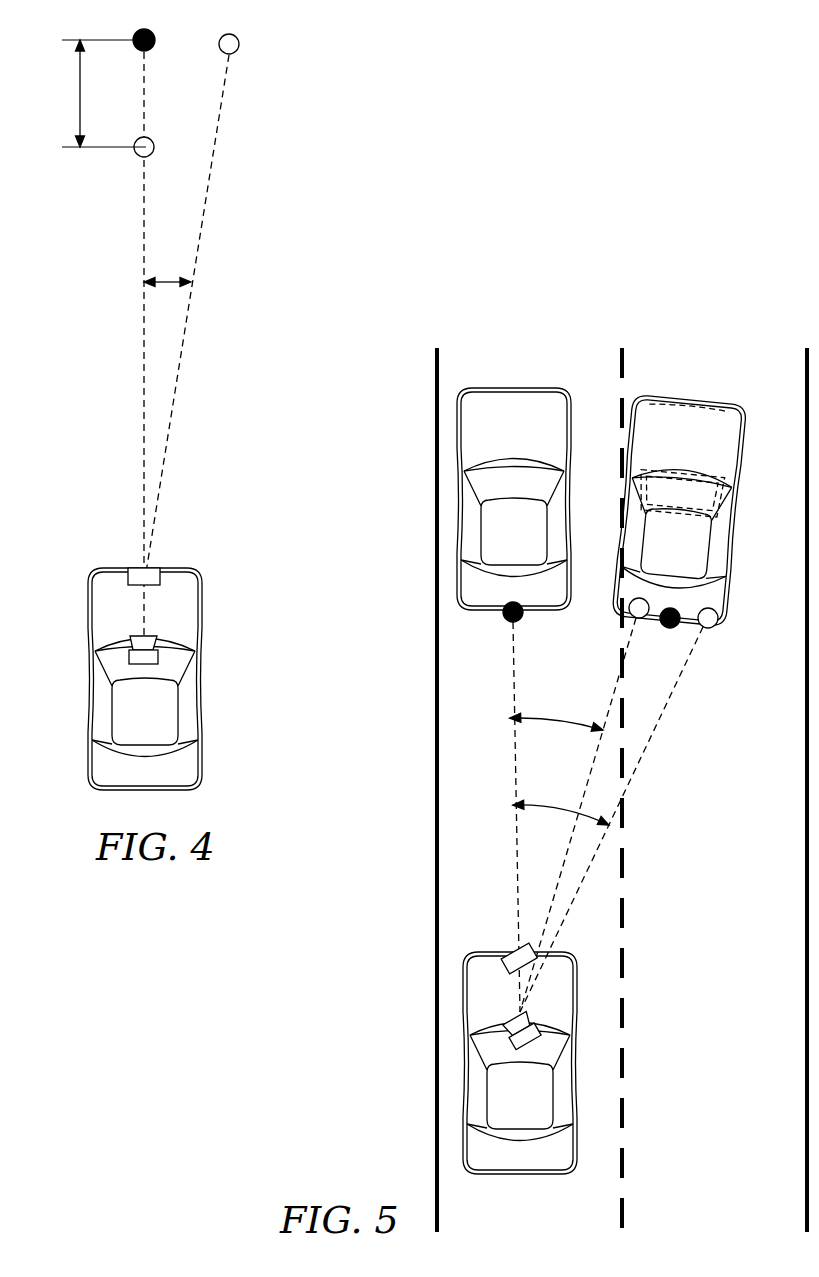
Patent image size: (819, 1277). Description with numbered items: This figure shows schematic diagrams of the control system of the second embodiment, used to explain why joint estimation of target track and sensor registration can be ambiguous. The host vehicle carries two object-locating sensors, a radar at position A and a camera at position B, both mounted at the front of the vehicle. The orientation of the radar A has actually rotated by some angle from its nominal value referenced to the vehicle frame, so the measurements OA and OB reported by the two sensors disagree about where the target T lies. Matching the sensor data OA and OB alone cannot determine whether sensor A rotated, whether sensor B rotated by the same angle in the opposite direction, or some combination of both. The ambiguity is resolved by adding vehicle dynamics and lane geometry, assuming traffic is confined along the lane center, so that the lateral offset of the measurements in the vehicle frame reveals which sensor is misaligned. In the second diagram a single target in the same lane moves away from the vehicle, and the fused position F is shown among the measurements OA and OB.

In FIG. 4, the true target position T is at (153, 40).
In FIG. 4, the sensor data of sensor A OA is at (251, 46).
In FIG. 5, the sensor data of sensor A OA is at (576, 625).
In FIG. 4, the sensor data of sensor B OB is at (127, 158).
In FIG. 5, the sensor data of sensor B OB is at (724, 639).
In FIG. 5, the fused object position F is at (670, 639).
In FIG. 4, the sensor A is at (151, 562).
In FIG. 5, the sensor A is at (525, 949).
In FIG. 4, the sensor B is at (175, 653).
In FIG. 5, the sensor B is at (549, 1031).